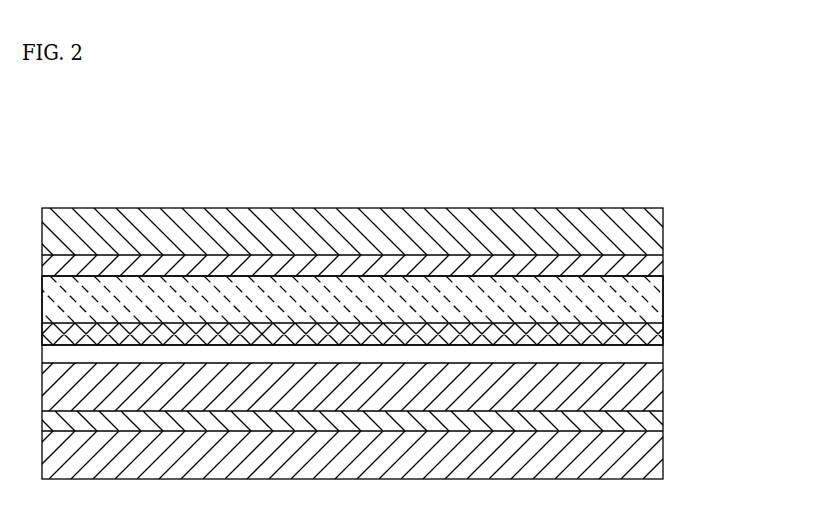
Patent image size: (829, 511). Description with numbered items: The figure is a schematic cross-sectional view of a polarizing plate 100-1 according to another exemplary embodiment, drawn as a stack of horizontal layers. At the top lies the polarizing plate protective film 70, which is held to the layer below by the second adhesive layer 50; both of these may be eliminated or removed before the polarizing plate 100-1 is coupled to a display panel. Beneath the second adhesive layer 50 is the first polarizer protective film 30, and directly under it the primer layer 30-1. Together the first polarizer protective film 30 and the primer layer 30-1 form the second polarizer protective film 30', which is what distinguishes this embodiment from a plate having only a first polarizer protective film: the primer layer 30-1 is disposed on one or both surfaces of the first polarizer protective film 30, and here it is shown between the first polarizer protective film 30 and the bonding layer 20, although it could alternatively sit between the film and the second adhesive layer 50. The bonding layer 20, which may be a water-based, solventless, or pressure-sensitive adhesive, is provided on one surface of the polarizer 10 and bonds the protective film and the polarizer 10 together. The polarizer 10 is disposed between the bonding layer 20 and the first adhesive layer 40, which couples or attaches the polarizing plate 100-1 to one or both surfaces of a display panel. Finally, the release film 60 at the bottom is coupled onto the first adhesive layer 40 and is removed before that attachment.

The polarizing plate 100-1 is at (410, 136).
The polarizing plate protective film 70 is at (658, 229).
The second adhesive layer 50 is at (660, 267).
The first polarizer protective film 30 is at (366, 299).
The primer layer 30-1 is at (658, 334).
The second polarizer protective film 30' is at (420, 310).
The bonding layer 20 is at (655, 353).
The polarizer 10 is at (658, 386).
The first adhesive layer 40 is at (658, 420).
The release film 60 is at (658, 454).